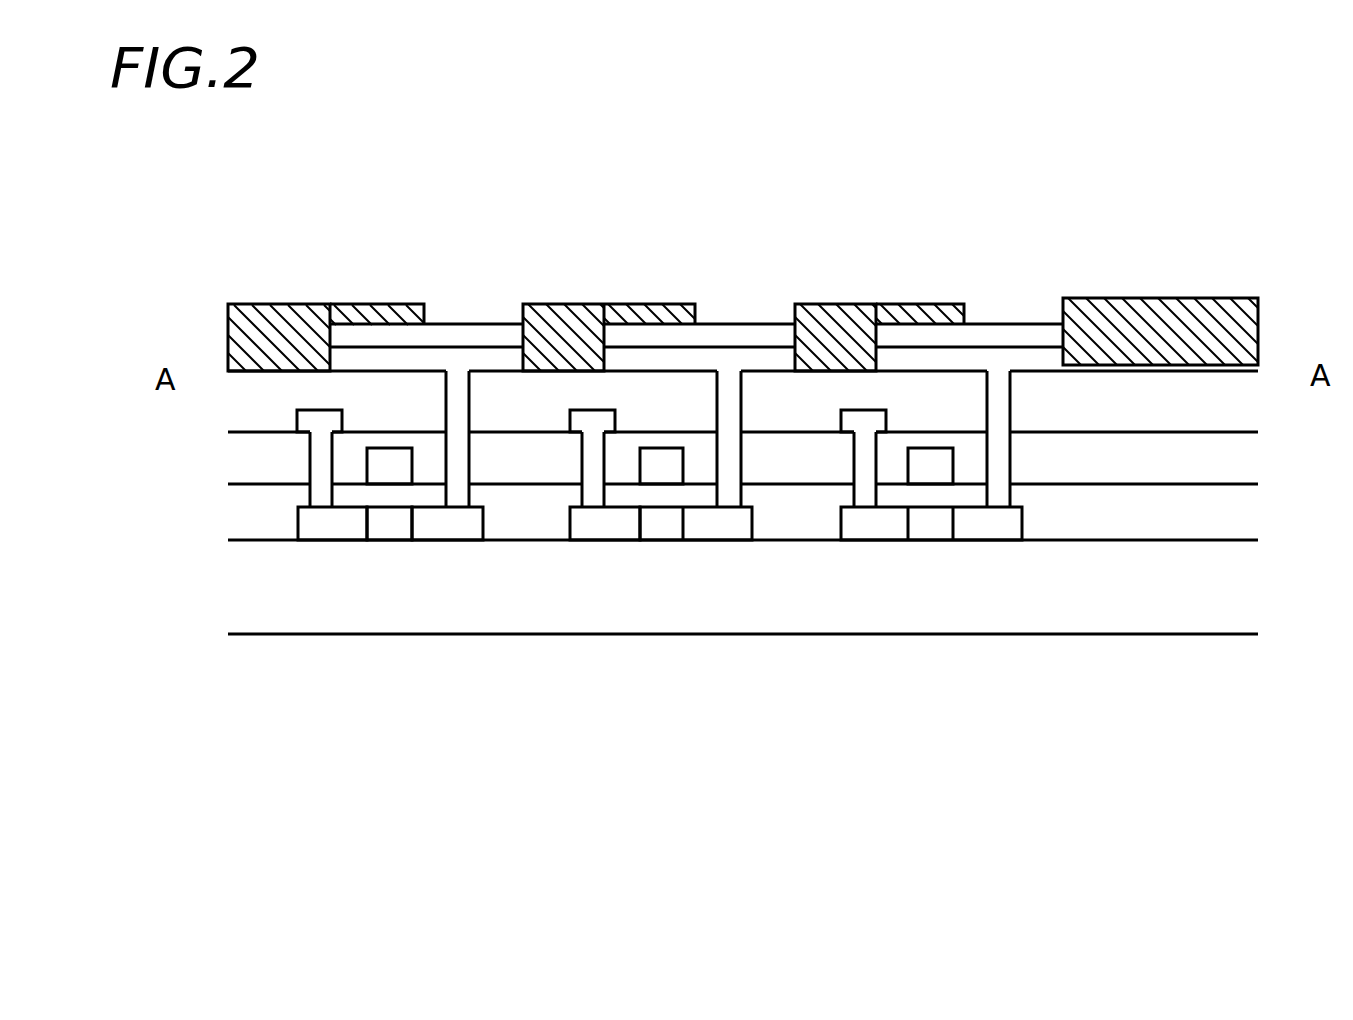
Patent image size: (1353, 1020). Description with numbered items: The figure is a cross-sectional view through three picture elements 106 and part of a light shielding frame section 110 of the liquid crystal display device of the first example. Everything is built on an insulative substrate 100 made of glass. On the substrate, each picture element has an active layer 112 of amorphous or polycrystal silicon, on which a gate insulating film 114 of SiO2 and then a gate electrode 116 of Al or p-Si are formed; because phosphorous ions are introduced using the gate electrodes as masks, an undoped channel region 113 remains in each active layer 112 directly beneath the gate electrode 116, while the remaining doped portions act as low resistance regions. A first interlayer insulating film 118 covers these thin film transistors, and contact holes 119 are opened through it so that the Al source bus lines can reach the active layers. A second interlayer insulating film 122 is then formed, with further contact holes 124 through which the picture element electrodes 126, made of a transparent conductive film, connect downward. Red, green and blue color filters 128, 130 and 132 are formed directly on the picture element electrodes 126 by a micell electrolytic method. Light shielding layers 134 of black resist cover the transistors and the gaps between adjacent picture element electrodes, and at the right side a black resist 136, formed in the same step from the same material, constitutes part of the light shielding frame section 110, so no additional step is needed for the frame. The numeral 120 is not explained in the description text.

The insulative substrate 100 is at (922, 614).
The picture element 106 is at (1058, 192).
The light shielding frame section 110 is at (1265, 222).
The active layer 112 is at (445, 530).
The undoped channel region 113 is at (388, 530).
The gate insulating film 114 is at (618, 492).
The gate electrode 116 is at (665, 472).
The first interlayer insulating film 118 is at (785, 467).
The contact hole 119 is at (308, 448).
The gate contact 120 is at (857, 433).
The second interlayer insulating film 122 is at (1135, 408).
The contact hole 124 is at (1003, 405).
The picture element electrode 126 is at (720, 362).
The red color filter 128 is at (485, 337).
The green color filter 130 is at (757, 337).
The blue color filter 132 is at (930, 338).
The light shielding layer 134 is at (312, 332).
The black resist 136 is at (1212, 340).